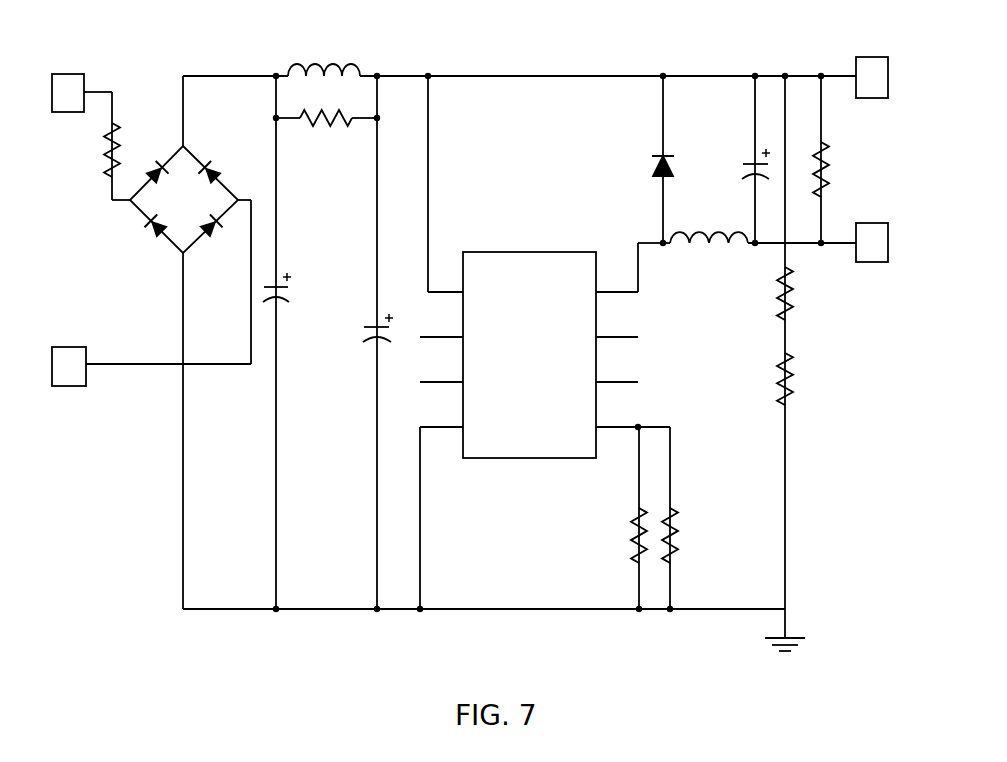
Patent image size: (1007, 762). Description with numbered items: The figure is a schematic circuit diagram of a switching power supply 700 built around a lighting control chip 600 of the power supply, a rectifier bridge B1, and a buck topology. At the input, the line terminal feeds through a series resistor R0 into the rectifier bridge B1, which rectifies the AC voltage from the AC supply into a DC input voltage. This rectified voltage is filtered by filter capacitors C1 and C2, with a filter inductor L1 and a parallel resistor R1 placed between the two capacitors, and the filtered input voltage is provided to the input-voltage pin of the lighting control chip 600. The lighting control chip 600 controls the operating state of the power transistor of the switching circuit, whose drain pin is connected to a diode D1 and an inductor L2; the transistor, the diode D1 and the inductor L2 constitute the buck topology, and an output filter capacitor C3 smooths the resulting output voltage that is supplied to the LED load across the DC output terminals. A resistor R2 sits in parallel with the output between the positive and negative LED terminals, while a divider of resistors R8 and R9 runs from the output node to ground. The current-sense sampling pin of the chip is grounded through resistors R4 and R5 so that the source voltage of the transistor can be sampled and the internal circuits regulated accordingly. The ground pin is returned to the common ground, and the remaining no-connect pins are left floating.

The switching power supply 700 is at (131, 39).
The lighting control chip 600 is at (548, 235).
The input resistor R0 is at (126, 146).
The rectifier bridge B1 is at (184, 221).
The filter capacitor C1 is at (293, 287).
The filter inductor L1 is at (324, 54).
The damping resistor R1 is at (326, 135).
The filter capacitor C2 is at (361, 332).
The diode D1 is at (650, 167).
The inductor L2 is at (709, 224).
The output filter capacitor C3 is at (740, 164).
The output resistor R2 is at (836, 169).
The voltage divider resistor R8 is at (802, 293).
The voltage divider resistor R9 is at (802, 379).
The resistor R4 is at (622, 535).
The resistor R5 is at (685, 535).